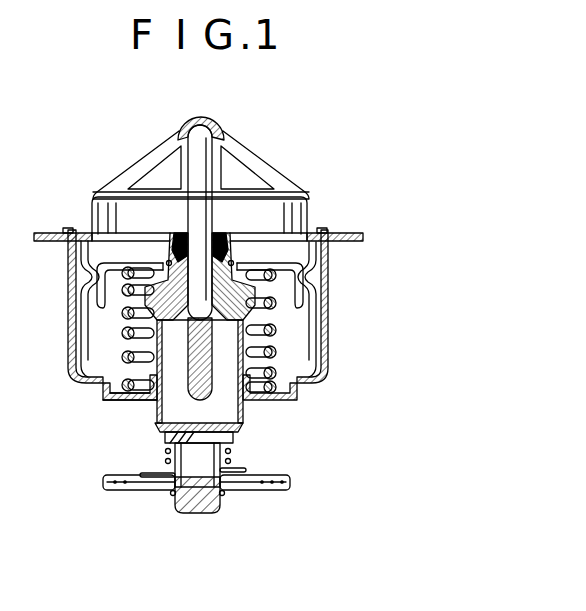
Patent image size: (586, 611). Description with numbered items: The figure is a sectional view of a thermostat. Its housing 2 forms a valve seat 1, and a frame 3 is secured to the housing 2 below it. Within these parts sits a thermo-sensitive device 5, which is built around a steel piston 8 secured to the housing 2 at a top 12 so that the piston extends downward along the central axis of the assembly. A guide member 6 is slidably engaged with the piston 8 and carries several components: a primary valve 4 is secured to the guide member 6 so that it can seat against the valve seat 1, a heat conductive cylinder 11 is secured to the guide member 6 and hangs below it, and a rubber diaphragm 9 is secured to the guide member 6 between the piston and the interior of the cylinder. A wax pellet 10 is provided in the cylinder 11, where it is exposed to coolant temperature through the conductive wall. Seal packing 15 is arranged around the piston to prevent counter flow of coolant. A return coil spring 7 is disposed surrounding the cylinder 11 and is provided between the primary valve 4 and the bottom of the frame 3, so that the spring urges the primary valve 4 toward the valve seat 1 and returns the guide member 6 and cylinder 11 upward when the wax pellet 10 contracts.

The valve seat 1 is at (115, 238).
The housing 2 is at (92, 213).
The frame 3 is at (331, 266).
The primary valve 4 is at (126, 292).
The thermo-sensitive device 5 is at (137, 447).
The guide member 6 is at (229, 250).
The return coil spring 7 is at (278, 352).
The steel piston 8 is at (208, 175).
The rubber diaphragm 9 is at (222, 409).
The wax pellet 10 is at (234, 436).
The heat conductive cylinder 11 is at (155, 409).
The top 12 is at (202, 118).
The seal packing 15 is at (180, 230).